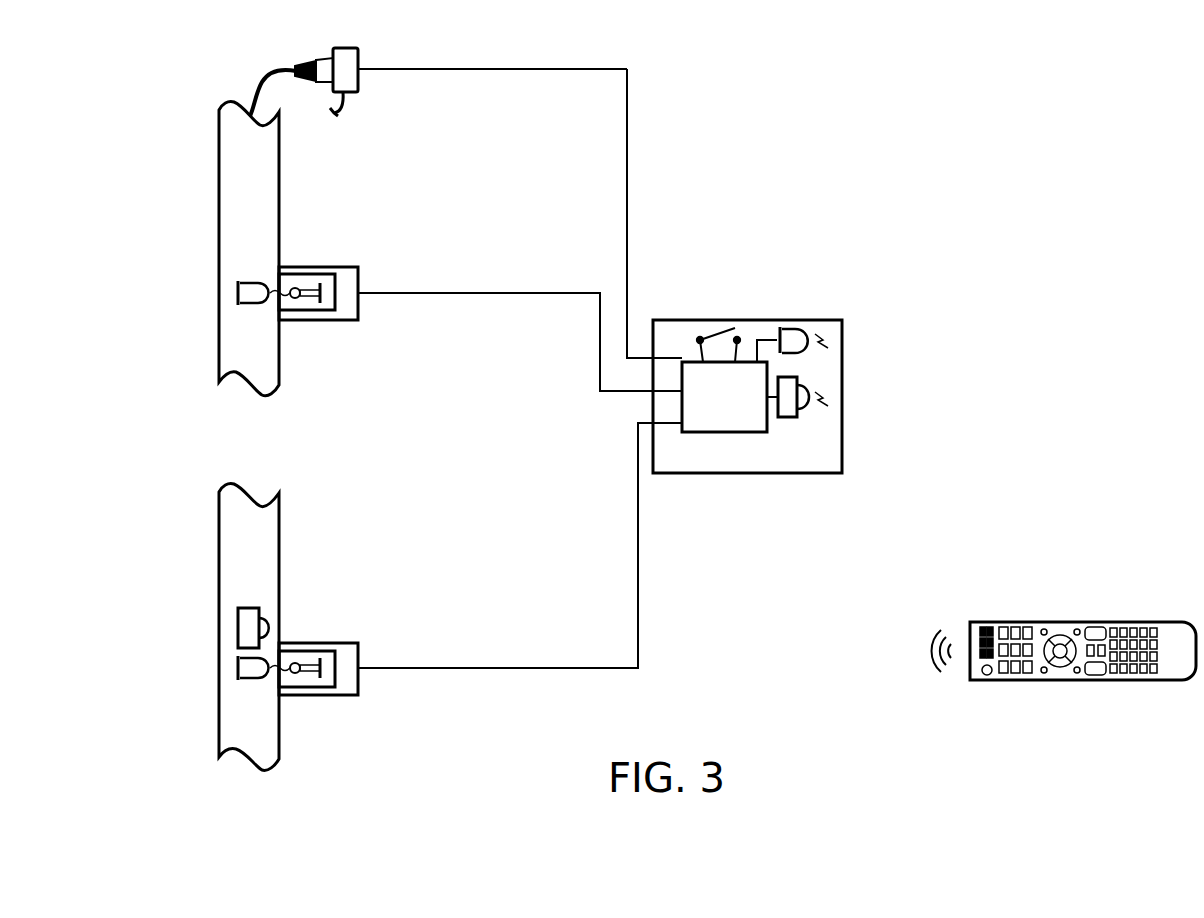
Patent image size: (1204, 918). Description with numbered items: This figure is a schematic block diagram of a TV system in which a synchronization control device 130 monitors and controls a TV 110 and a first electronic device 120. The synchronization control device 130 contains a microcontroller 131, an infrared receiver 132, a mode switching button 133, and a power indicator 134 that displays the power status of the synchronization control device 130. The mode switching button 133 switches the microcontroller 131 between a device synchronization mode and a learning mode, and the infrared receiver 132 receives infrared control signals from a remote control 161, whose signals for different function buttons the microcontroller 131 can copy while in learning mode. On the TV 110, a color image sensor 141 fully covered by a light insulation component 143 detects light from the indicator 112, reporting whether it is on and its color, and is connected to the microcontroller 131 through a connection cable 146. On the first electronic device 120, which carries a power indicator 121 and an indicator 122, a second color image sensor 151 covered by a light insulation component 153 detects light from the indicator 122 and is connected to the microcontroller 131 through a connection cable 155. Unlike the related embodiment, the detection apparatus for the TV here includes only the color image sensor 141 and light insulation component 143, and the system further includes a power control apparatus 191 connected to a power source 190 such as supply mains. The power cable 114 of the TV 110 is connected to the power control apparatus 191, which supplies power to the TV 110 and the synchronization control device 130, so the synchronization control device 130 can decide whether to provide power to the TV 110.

The TV 110 is at (238, 188).
The infrared receiver 112 is at (240, 293).
The power cable 114 is at (312, 82).
The first electronic device 120 is at (240, 563).
The power indicator 121 is at (240, 626).
The infrared receiver 122 is at (240, 667).
The synchronization control device 130 is at (668, 318).
The microcontroller 131 is at (726, 433).
The infrared receiver 132 is at (791, 418).
The mode switching button 133 is at (720, 319).
The power indicator 134 is at (802, 319).
The color image sensor 141 is at (311, 288).
The light insulation component 143 is at (318, 322).
The connection cable 146 is at (523, 296).
The color image sensor 151 is at (311, 663).
The light insulation component 153 is at (318, 697).
The connection cable 155 is at (525, 666).
The remote control 161 is at (1076, 620).
The power source 190 is at (348, 118).
The power control apparatus 191 is at (362, 82).